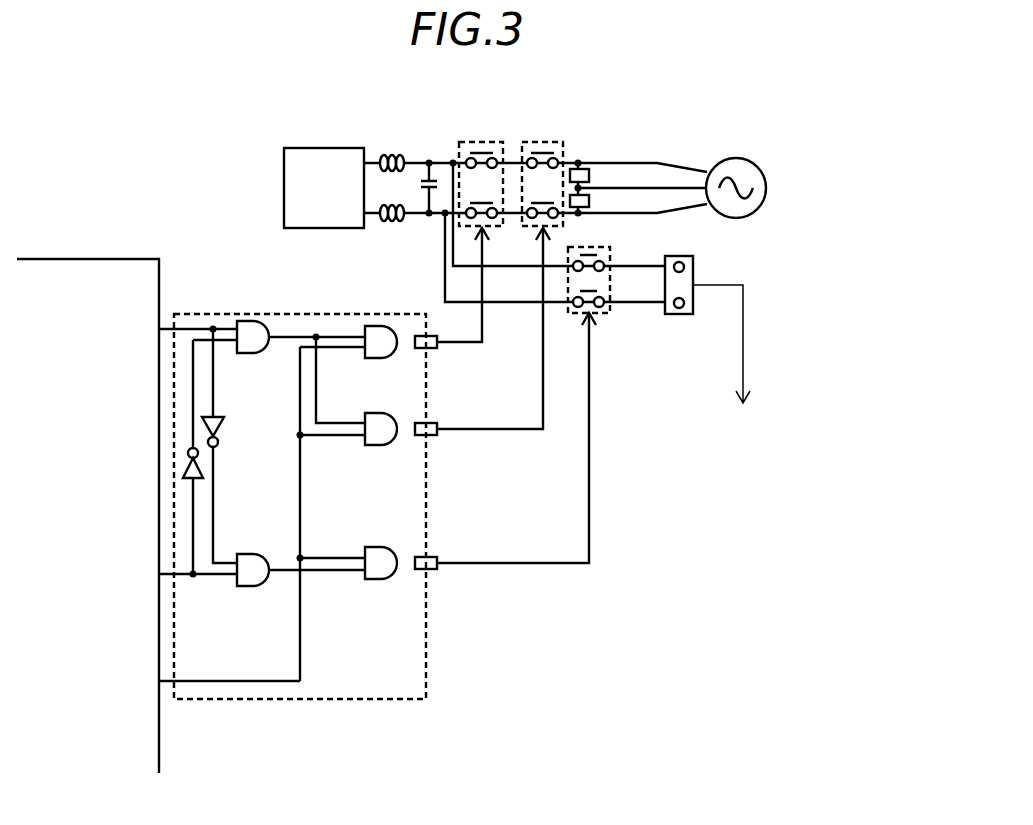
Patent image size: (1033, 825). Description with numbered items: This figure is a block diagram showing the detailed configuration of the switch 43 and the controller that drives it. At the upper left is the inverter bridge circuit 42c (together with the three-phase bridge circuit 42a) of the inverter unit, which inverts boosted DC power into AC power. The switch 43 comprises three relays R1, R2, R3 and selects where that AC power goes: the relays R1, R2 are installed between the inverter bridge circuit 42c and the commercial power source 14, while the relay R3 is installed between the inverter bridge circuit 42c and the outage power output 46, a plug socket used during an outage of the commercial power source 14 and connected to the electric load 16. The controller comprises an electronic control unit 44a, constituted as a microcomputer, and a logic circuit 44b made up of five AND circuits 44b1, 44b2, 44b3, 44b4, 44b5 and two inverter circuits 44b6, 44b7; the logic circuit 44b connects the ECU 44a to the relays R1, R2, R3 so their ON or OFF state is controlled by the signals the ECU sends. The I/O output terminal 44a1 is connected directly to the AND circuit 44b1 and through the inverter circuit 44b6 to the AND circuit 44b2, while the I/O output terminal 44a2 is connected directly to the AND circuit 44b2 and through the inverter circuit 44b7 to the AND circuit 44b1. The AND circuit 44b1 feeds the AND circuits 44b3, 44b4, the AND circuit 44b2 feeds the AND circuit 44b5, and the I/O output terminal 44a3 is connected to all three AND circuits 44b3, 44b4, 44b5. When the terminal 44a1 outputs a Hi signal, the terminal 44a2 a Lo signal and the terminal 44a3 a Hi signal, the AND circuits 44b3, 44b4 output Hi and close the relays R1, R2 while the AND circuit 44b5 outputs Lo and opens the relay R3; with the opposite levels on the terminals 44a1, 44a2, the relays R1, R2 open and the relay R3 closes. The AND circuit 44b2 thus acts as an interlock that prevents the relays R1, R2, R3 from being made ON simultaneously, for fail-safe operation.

The inverter bridge circuit 42c is at (353, 175).
The three-phase bridge circuit 42a is at (325, 147).
The relay R1 is at (481, 171).
The relay R2 is at (542, 171).
The relay R3 is at (616, 270).
The switch 43 is at (616, 157).
The commercial power source 14 is at (737, 157).
The outage power output 46 is at (679, 315).
The electric load 16 is at (762, 347).
The electronic control unit 44a is at (80, 259).
The I/O output terminal 44a1 is at (161, 328).
The I/O output terminal 44a2 is at (161, 577).
The I/O output terminal 44a3 is at (161, 684).
The logic circuit 44b is at (358, 700).
The AND circuit 44b1 is at (246, 320).
The AND circuit 44b2 is at (246, 554).
The AND circuit 44b3 is at (378, 326).
The AND circuit 44b4 is at (378, 413).
The AND circuit 44b5 is at (378, 547).
The inverter circuit 44b6 is at (216, 416).
The inverter circuit 44b7 is at (200, 470).